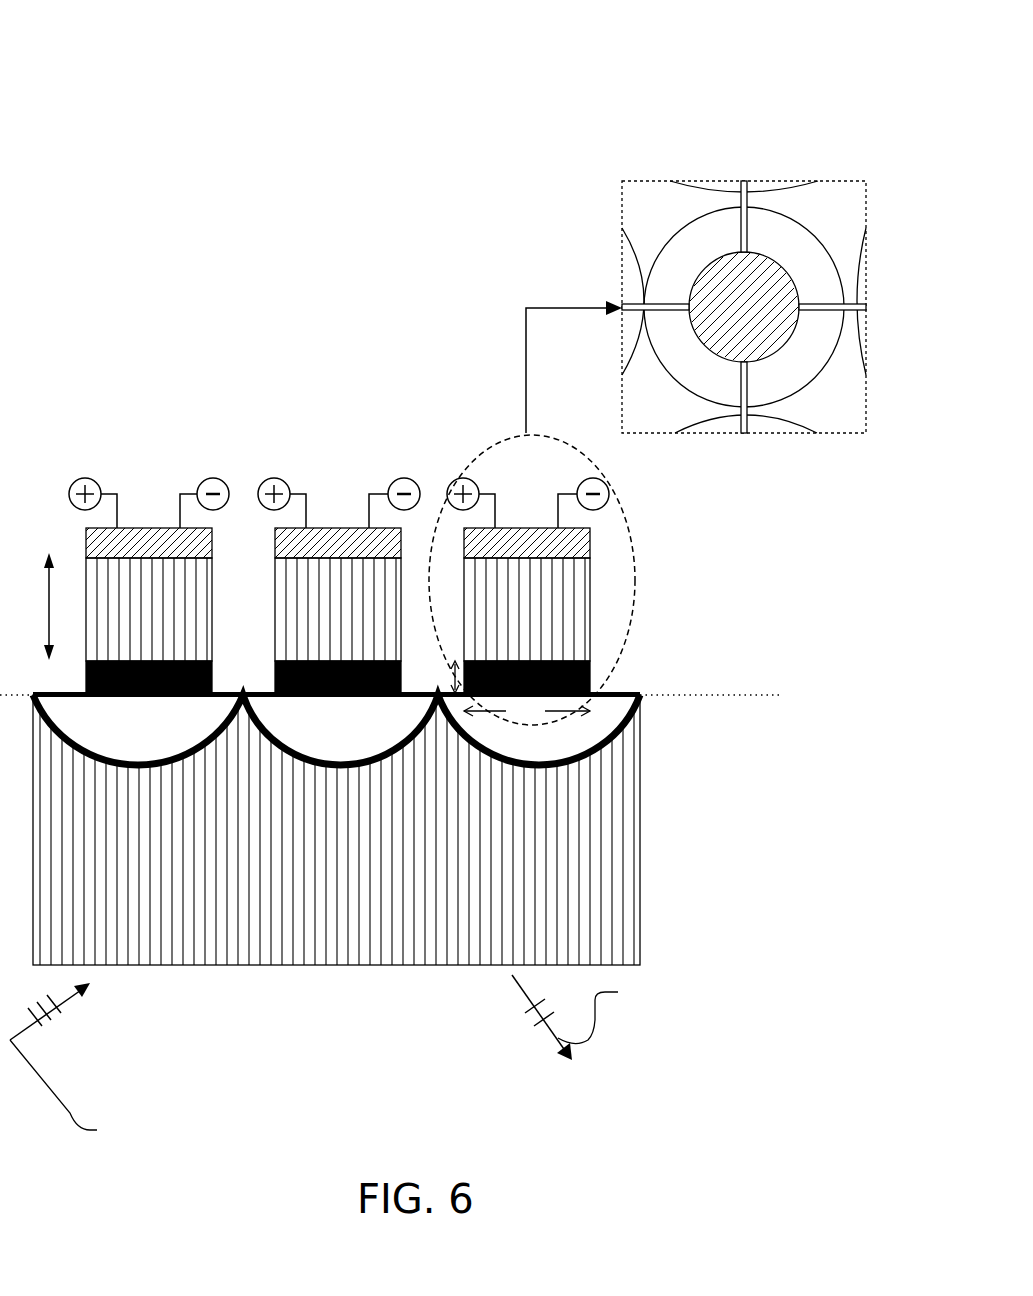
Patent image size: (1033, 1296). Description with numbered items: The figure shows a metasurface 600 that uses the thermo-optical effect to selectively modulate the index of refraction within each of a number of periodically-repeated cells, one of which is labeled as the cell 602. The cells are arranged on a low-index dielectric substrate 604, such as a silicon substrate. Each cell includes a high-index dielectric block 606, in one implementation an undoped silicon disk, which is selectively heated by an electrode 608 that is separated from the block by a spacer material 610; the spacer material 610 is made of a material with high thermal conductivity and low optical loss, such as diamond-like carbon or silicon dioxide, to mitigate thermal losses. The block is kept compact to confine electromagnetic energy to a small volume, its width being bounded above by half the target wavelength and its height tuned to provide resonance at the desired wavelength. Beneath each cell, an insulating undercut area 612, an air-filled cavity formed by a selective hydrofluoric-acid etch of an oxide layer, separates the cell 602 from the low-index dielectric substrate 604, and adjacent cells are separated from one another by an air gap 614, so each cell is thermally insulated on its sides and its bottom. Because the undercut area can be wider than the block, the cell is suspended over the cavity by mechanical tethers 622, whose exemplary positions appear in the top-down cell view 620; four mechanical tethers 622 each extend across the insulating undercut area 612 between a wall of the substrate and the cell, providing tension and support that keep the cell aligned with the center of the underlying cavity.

The metasurface 600 is at (126, 52).
The cell 602 is at (495, 442).
The low-index dielectric substrate 604 is at (612, 905).
The high-index dielectric block 606 is at (593, 673).
The electrode 608 is at (590, 541).
The spacer material 610 is at (590, 597).
The insulating undercut area 612 is at (572, 737).
The air gap 614 is at (250, 556).
The top-down cell view 620 is at (622, 210).
The mechanical tether 622 is at (823, 310).